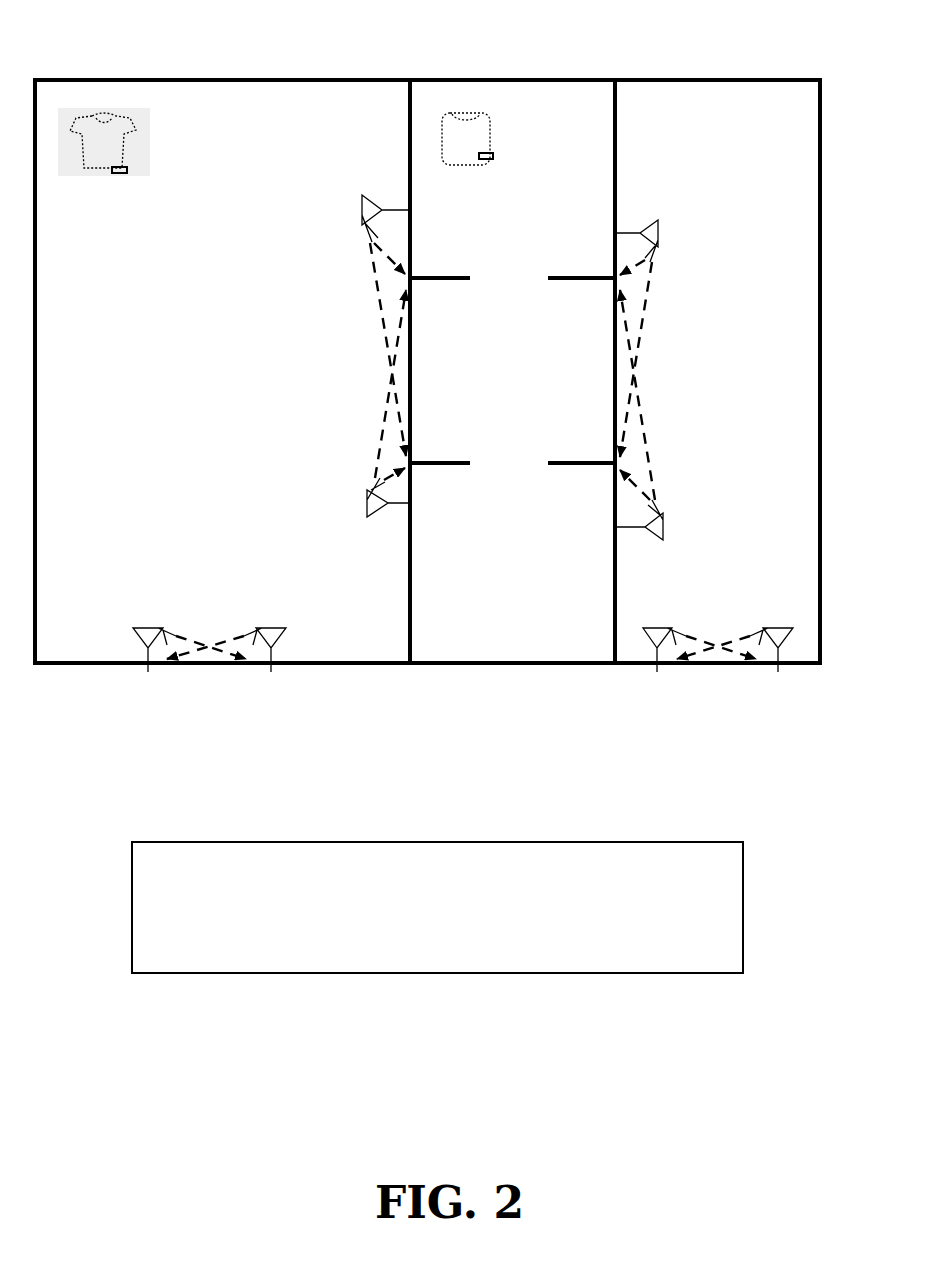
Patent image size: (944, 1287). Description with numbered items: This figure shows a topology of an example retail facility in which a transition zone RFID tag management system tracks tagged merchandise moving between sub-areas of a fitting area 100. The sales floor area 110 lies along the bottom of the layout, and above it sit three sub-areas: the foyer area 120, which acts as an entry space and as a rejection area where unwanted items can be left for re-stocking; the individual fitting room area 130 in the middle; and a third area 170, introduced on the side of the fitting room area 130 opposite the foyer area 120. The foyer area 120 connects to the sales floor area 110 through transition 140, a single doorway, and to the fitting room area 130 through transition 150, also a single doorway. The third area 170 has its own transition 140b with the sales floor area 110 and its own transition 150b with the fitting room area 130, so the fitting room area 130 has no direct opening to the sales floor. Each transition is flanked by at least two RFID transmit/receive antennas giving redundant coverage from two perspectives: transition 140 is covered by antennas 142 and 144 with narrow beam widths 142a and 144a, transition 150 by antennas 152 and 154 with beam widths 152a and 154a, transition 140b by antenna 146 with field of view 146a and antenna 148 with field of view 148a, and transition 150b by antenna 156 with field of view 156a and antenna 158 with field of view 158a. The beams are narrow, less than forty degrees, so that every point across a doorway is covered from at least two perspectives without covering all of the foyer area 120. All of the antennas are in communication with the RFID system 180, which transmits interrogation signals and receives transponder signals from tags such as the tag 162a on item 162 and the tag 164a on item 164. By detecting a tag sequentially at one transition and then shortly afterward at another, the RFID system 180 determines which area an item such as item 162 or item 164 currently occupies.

The fitting area 100 is at (99, 72).
The Area_0 110 is at (387, 710).
The Area_1 120 is at (127, 315).
The Area_2 130 is at (511, 358).
The Area_3 170 is at (739, 404).
The RFID system 180 is at (437, 907).
The transition 140 is at (176, 690).
The transition 140b is at (719, 679).
The RFID transmit/receive antenna 142 is at (142, 623).
The beam width 142a is at (182, 622).
The RFID transmit/receive antenna 144 is at (282, 620).
The beam width 144a is at (232, 637).
The antenna 146 is at (652, 612).
The field of view 146a is at (690, 612).
The antenna 148 is at (790, 608).
The field of view 148a is at (742, 627).
The transition 150 is at (414, 374).
The transition 150b is at (598, 374).
The RFID transmit/receive antenna 152 is at (360, 197).
The beam width 152a is at (378, 305).
The RFID transmit/receive antenna 154 is at (360, 500).
The beam width 154a is at (378, 412).
The antenna 156 is at (668, 235).
The field of view 156a is at (648, 325).
The antenna 158 is at (640, 518).
The field of view 158a is at (648, 430).
The item 162 is at (130, 123).
The tag 162a is at (128, 170).
The item 164 is at (492, 122).
The tag 164a is at (495, 156).